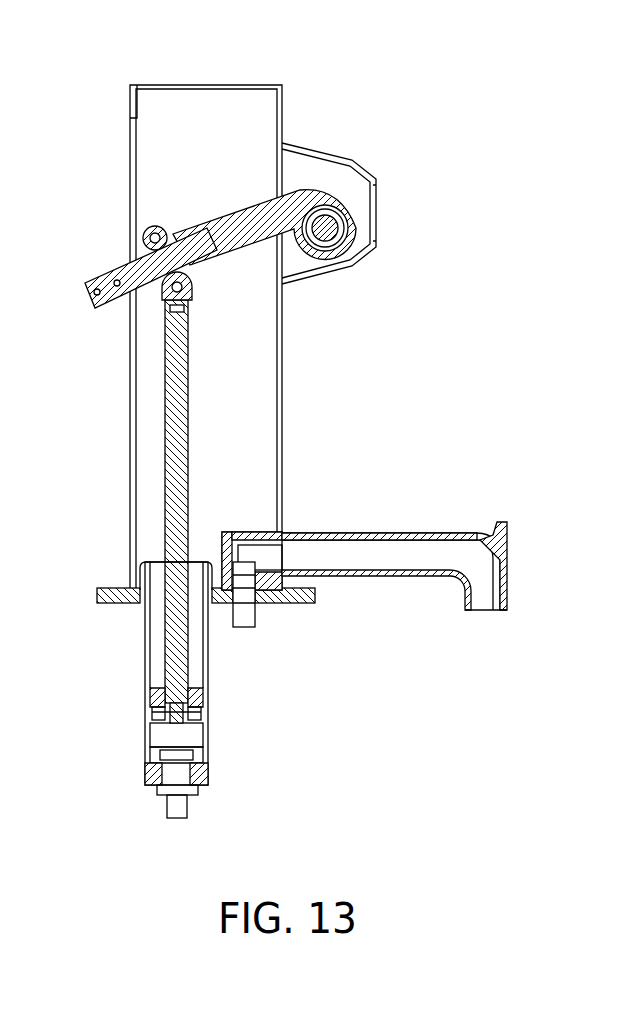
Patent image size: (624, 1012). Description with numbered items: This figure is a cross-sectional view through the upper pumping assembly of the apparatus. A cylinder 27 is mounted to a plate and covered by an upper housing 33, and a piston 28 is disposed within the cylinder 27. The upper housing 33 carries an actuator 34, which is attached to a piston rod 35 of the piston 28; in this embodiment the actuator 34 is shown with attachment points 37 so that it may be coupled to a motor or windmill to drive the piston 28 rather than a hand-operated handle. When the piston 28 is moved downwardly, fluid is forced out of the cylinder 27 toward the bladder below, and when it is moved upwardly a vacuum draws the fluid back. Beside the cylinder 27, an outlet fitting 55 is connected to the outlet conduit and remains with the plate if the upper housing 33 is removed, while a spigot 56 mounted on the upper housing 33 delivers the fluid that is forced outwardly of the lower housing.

The cylinder 27 is at (145, 662).
The piston 28 is at (160, 722).
The upper housing 33 is at (282, 330).
The actuator 34 is at (232, 235).
The piston rod 35 is at (182, 432).
The attachment points 37 is at (153, 236).
The outlet fitting 55 is at (250, 628).
The spigot 56 is at (395, 533).